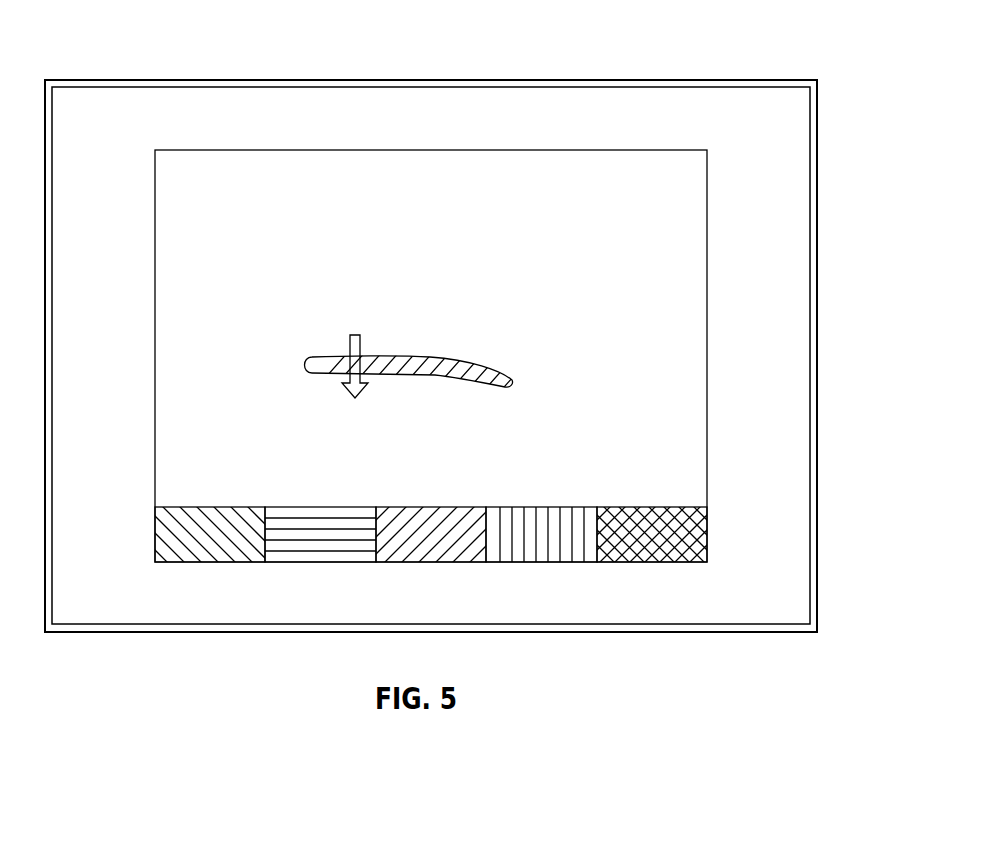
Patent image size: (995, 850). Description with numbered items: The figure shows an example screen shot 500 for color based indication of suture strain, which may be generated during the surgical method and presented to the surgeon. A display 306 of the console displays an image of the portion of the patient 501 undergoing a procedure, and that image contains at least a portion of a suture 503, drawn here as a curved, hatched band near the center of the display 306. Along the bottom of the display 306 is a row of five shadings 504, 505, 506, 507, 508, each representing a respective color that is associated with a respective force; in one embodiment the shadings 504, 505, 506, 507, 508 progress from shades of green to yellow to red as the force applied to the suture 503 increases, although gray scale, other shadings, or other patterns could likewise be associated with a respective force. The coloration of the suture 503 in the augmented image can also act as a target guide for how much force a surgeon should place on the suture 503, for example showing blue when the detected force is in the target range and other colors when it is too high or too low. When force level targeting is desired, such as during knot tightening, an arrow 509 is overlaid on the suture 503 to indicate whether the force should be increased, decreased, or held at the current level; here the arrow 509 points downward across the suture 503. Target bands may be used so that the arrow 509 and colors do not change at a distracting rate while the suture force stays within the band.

The display screen view 500 is at (799, 40).
The portion of the patient 501 is at (100, 113).
The display 306 is at (387, 172).
The suture 503 is at (418, 355).
The shading 504 is at (208, 508).
The shading 505 is at (314, 508).
The shading 506 is at (430, 508).
The shading 507 is at (528, 508).
The shading 508 is at (640, 508).
The arrow 509 is at (348, 351).